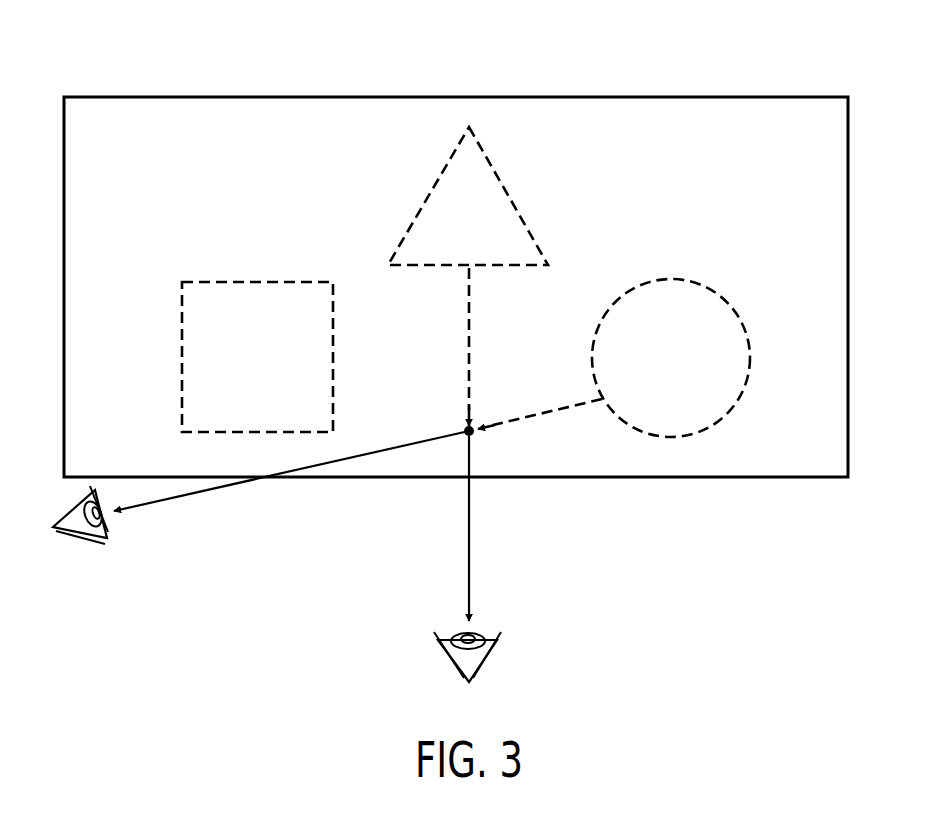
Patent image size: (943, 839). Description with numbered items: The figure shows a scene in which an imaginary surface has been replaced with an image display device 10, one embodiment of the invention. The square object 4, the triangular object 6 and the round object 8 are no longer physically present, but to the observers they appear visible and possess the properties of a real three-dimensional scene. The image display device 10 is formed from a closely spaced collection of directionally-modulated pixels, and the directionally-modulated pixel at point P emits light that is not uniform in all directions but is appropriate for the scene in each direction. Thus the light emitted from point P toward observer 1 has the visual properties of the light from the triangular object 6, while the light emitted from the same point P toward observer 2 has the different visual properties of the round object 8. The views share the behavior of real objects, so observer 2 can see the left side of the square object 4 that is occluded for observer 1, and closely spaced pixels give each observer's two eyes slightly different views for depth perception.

The observer 1 is at (485, 667).
The observer 2 is at (76, 536).
The square object 4 is at (237, 282).
The triangular object 6 is at (510, 188).
The round object 8 is at (732, 303).
The image display device 10 is at (762, 97).
The point P is at (475, 437).